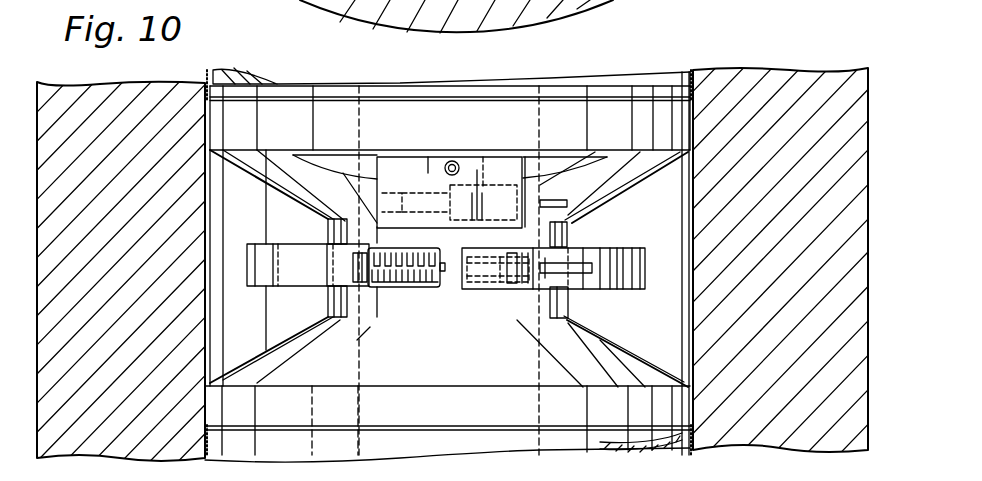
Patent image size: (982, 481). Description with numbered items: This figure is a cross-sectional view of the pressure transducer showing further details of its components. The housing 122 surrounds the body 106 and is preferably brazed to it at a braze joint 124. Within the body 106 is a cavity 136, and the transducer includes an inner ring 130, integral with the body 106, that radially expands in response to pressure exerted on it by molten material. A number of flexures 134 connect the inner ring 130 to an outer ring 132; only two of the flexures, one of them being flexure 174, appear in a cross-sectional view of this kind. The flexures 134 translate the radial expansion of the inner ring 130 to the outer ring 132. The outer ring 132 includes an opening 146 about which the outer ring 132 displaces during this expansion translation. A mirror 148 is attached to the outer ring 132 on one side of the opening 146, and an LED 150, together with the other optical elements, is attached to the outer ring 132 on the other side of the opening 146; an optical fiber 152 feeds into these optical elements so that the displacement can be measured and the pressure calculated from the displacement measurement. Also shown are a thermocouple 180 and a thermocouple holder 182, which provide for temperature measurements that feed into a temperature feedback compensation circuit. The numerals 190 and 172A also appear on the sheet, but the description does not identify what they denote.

The body 106 is at (580, 90).
The housing 122 is at (837, 75).
The braze joint 124 is at (693, 70).
The inner ring 130 is at (568, 228).
The outer ring 132 is at (647, 292).
The flexures 134 is at (603, 248).
The cavity 136 is at (264, 327).
The opening 146 is at (448, 313).
The mirror 148 is at (440, 290).
The LED 150 is at (537, 386).
The optical fiber 152 is at (570, 290).
The thermocouple 180 is at (487, 177).
The thermocouple holder 182 is at (430, 160).
The drum wall 190 is at (583, 7).
The drum element 172A is at (232, 6).
The flexure 174 is at (685, 6).